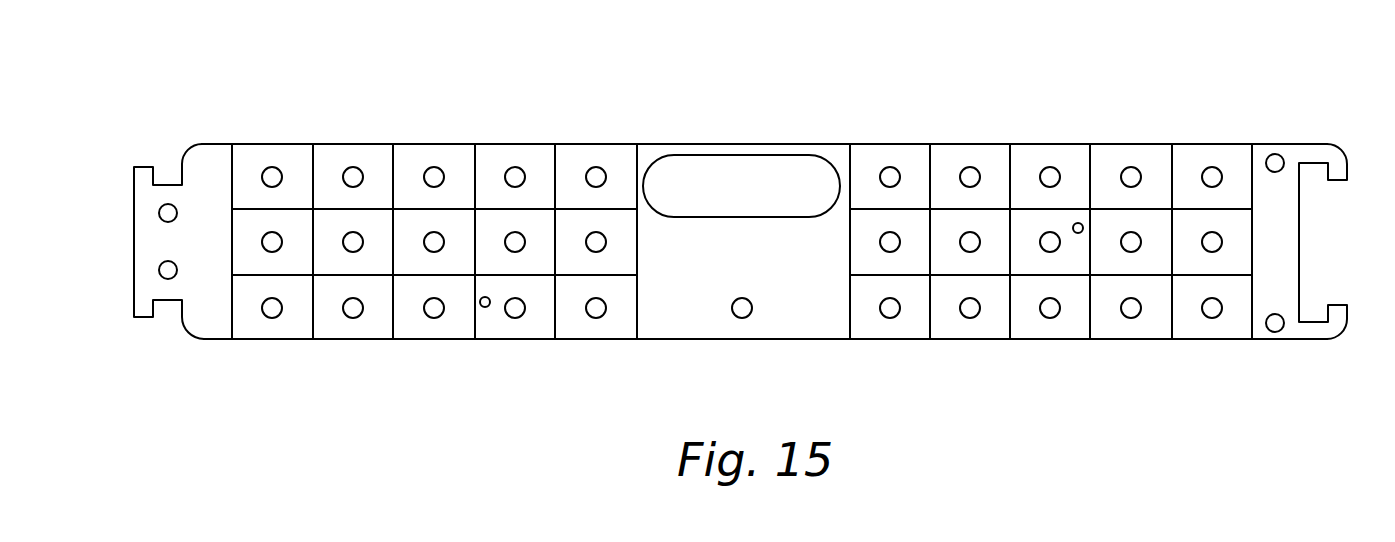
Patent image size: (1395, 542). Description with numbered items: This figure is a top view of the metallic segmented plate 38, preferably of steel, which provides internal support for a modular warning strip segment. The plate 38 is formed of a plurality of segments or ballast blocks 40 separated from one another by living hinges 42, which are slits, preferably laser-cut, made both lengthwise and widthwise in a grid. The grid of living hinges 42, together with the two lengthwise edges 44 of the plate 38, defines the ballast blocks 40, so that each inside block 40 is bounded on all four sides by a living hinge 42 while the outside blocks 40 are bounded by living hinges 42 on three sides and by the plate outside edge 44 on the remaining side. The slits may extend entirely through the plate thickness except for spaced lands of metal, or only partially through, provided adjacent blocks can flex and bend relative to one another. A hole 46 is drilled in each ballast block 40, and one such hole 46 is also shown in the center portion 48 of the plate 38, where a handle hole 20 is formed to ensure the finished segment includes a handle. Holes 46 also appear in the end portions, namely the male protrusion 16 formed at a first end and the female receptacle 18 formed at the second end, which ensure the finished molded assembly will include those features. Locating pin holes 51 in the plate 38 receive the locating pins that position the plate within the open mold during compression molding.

The male protrusion 16 is at (145, 173).
The female receptacle 18 is at (1288, 253).
The handle hole 20 is at (752, 178).
The segmented plate 38 is at (295, 350).
The ballast block 40 is at (1112, 158).
The living hinge 42 is at (232, 236).
The lengthwise edge 44 is at (675, 144).
The hole 46 is at (431, 166).
The center portion 48 is at (688, 298).
The locating pin hole 51 is at (485, 307).